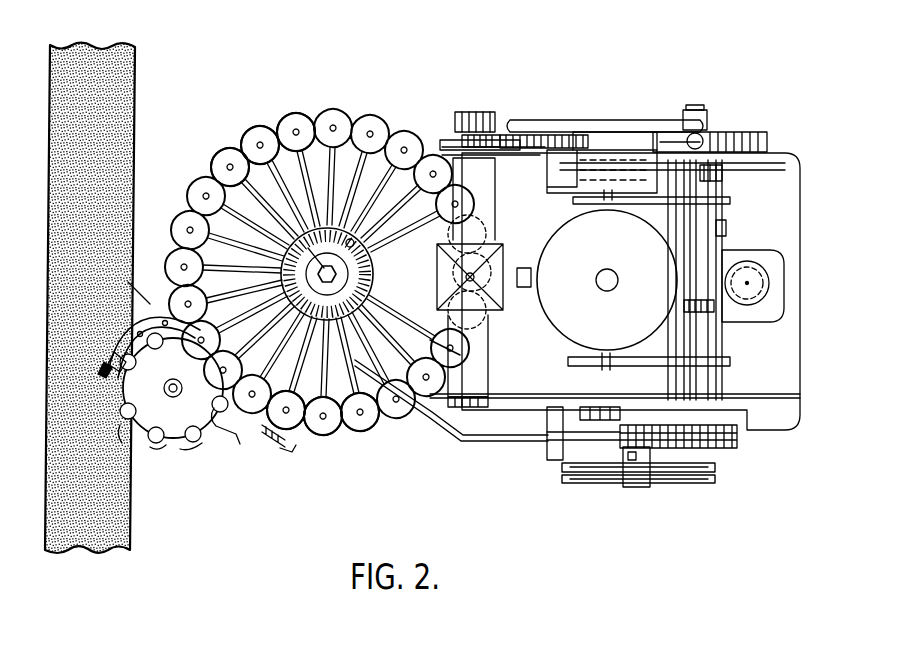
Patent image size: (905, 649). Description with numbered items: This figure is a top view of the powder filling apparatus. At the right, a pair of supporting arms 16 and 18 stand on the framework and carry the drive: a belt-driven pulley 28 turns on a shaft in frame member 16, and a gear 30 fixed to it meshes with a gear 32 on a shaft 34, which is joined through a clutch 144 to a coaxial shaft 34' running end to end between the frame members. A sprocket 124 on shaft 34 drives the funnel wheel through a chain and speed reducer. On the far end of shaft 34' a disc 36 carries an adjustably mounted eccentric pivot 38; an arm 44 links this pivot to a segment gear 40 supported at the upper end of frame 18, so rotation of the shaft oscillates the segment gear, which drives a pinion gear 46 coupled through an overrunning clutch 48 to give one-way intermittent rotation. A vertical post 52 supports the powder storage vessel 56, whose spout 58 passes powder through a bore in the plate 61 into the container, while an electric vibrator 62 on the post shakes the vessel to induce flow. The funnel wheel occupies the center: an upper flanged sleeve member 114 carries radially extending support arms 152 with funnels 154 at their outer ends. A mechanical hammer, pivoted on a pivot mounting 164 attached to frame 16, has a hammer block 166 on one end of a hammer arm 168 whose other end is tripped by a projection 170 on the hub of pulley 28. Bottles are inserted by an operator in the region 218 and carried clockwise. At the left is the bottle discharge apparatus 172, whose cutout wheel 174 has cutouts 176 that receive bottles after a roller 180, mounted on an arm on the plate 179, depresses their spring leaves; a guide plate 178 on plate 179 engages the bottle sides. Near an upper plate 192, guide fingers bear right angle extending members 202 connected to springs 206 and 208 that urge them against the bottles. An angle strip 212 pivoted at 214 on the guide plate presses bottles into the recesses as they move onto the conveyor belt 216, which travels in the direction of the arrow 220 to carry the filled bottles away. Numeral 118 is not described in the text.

The supporting arm 16 is at (750, 405).
The supporting arm 18 is at (572, 131).
The pulley 28 is at (602, 484).
The gear 30 is at (622, 436).
The gear 32 is at (720, 448).
The shaft 34 is at (702, 280).
The shaft 34' is at (720, 183).
The disc 36 is at (745, 132).
The eccentric pivot 38 is at (698, 110).
The segment gear 40 is at (540, 134).
The arm 44 is at (602, 120).
The pinion gear 46 is at (455, 130).
The overrunning clutch 48 is at (472, 112).
The post 52 is at (762, 283).
The powder storage vessel 56 is at (560, 333).
The spout 58 is at (522, 265).
The plate 61 is at (514, 312).
The electric vibrator 62 is at (764, 318).
The upper flanged sleeve member 114 is at (229, 170).
The spool 118 is at (268, 145).
The sprocket 124 is at (720, 341).
The clutch 144 is at (728, 230).
The support arm 152 is at (337, 117).
The funnel 154 is at (295, 117).
The pivot mounting 164 is at (545, 462).
The hammer block 166 is at (352, 432).
The hammer arm 168 is at (445, 445).
The projection 170 is at (633, 466).
The bottle discharge apparatus 172 is at (225, 492).
The cutout wheel 174 is at (162, 445).
The cutout 176 is at (122, 438).
The guide plate 178 is at (104, 364).
The plate 179 is at (134, 285).
The roller 180 is at (326, 437).
The upper plate 192 is at (230, 422).
The right angle extending member 202 is at (296, 428).
The spring 206 is at (268, 446).
The spring 208 is at (288, 458).
The angle strip 212 is at (132, 348).
The pivot 214 is at (114, 356).
The conveyor belt 216 is at (62, 490).
The bottle insertion region 218 is at (320, 43).
The arrow 220 is at (40, 422).